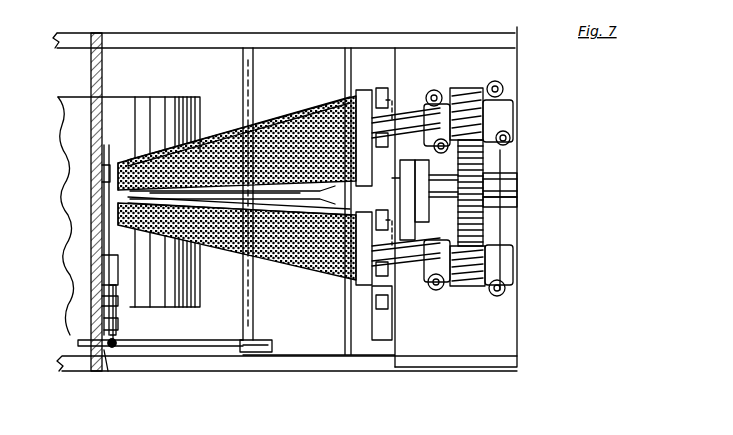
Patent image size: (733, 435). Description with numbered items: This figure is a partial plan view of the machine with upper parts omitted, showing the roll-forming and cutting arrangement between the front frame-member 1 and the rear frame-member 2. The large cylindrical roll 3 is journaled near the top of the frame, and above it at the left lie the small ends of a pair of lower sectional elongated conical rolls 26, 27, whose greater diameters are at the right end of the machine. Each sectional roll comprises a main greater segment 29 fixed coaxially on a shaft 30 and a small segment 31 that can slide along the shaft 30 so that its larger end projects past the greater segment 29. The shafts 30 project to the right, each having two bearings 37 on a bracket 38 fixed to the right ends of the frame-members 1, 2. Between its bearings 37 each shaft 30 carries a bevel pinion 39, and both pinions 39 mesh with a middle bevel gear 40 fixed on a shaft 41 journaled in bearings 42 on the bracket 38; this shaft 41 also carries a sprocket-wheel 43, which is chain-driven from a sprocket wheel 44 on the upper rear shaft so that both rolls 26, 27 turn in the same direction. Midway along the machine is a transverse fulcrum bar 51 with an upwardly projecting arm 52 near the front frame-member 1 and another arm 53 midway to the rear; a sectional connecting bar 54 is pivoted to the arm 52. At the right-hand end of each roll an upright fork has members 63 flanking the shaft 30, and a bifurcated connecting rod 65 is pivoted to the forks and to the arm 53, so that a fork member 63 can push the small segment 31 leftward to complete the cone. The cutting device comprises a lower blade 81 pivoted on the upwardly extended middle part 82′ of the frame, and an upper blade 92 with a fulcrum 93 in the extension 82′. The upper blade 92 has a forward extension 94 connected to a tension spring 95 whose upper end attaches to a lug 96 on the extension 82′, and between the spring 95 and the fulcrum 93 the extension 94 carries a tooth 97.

The front frame-member 1 is at (190, 372).
The rear frame-member 2 is at (185, 40).
The cylindrical roll 3 is at (134, 97).
The sectional elongated conical roll 26 is at (300, 270).
The sectional elongated conical roll 27 is at (284, 106).
The main greater segment 29 is at (236, 256).
The shaft 30 is at (400, 116).
The small segment 31 is at (118, 160).
The bearings 37 is at (438, 88).
The bracket 38 is at (517, 222).
The bevel pinion 39 is at (478, 88).
The middle bevel gear 40 is at (485, 157).
The shaft 41 is at (519, 190).
The bearings 42 is at (517, 204).
The sprocket-wheel 43 is at (400, 176).
The sprocket wheel 44 is at (425, 200).
The transverse fulcrum bar 51 is at (256, 310).
The upwardly projecting arm 52 is at (272, 348).
The upwardly projecting arm 53 is at (228, 124).
The sectional connecting bar 54 is at (191, 340).
The fork members 63 is at (388, 88).
The bifurcated connecting rod 65 is at (239, 194).
The lower blade 81 is at (90, 172).
The upwardly extended middle part of machine-frame 82′ is at (100, 258).
The upper blade 92 is at (103, 230).
The fulcrum 93 is at (122, 300).
The extension 94 is at (102, 322).
The tension spring 95 is at (115, 350).
The lug 96 is at (104, 372).
The tooth 97 is at (100, 300).